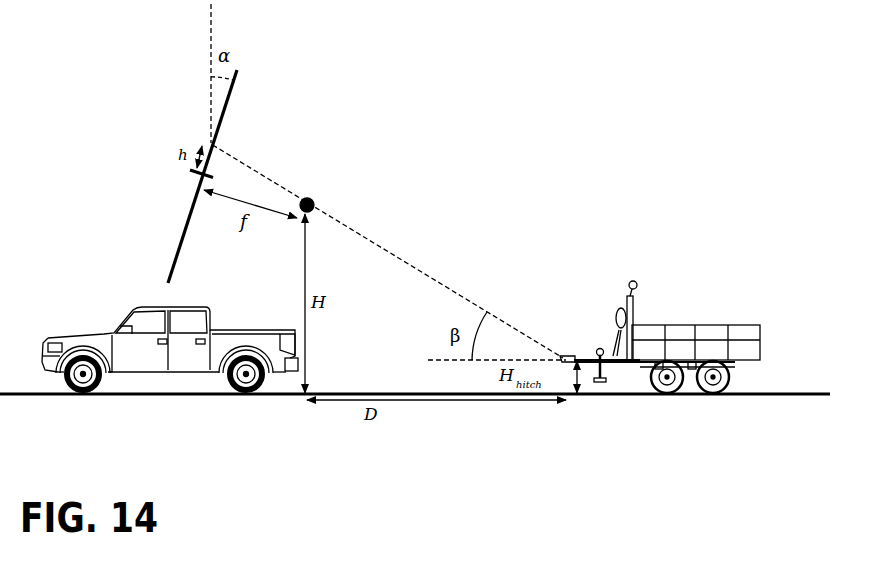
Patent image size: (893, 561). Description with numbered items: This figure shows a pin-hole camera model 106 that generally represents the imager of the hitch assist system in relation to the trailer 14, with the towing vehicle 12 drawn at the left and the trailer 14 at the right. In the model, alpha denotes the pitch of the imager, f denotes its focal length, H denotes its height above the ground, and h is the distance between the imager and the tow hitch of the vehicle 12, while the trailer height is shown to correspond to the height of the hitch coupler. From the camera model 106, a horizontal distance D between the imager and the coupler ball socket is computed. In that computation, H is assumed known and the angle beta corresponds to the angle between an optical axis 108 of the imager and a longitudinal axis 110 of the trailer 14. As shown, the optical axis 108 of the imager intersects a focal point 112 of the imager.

The vehicle 12 is at (100, 288).
The trailer 14 is at (693, 303).
The pin-hole camera model 106 is at (160, 120).
The optical axis 108 is at (258, 172).
The longitudinal axis 110 is at (462, 361).
The focal point 112 is at (312, 199).